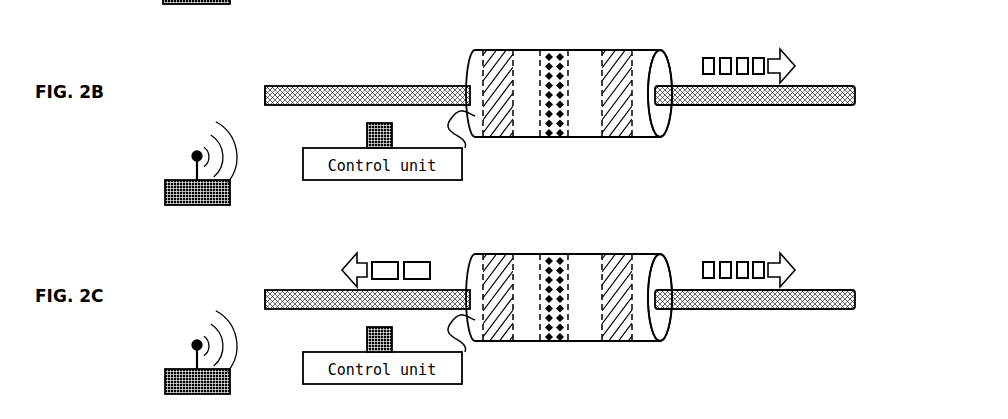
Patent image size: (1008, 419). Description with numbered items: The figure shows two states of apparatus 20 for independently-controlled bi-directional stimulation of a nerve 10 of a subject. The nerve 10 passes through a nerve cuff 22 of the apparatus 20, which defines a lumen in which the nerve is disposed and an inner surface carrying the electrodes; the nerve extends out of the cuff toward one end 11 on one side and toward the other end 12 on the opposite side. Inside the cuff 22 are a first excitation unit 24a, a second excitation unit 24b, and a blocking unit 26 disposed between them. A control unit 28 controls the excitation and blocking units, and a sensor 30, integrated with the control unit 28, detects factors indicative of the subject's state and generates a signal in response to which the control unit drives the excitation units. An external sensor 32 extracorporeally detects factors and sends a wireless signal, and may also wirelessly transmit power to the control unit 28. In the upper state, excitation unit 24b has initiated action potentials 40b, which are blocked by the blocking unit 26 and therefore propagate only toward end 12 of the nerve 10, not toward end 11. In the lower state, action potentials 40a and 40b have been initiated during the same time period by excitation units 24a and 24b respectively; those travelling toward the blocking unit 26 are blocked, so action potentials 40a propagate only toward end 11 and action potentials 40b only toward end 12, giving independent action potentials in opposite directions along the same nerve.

In FIG. 2B, the nerve 10 is at (278, 85).
In FIG. 2C, the nerve 10 is at (367, 274).
In FIG. 2B, the end of nerve 11 is at (263, 93).
In FIG. 2C, the end of nerve 11 is at (261, 328).
In FIG. 2B, the end of nerve 12 is at (857, 95).
In FIG. 2C, the end of nerve 12 is at (767, 330).
In FIG. 2B, the apparatus 20 is at (668, 38).
In FIG. 2C, the apparatus 20 is at (676, 271).
In FIG. 2B, the nerve cuff 22 is at (640, 50).
In FIG. 2C, the nerve cuff 22 is at (573, 262).
In FIG. 2B, the excitation unit 24a is at (497, 50).
In FIG. 2C, the excitation unit 24a is at (499, 298).
In FIG. 2B, the excitation unit 24b is at (618, 50).
In FIG. 2C, the excitation unit 24b is at (618, 298).
In FIG. 2B, the blocking unit 26 is at (553, 50).
In FIG. 2C, the blocking unit 26 is at (554, 274).
In FIG. 2B, the control unit 28 is at (462, 163).
In FIG. 2C, the control unit 28 is at (404, 349).
In FIG. 2B, the sensor 30 is at (367, 125).
In FIG. 2C, the sensor 30 is at (350, 333).
In FIG. 2B, the external sensor 32 is at (165, 182).
In FIG. 2C, the external sensor 32 is at (172, 352).
In FIG. 2C, the action potentials 40a is at (386, 255).
In FIG. 2B, the action potentials 40b is at (752, 53).
In FIG. 2C, the action potentials 40b is at (749, 255).